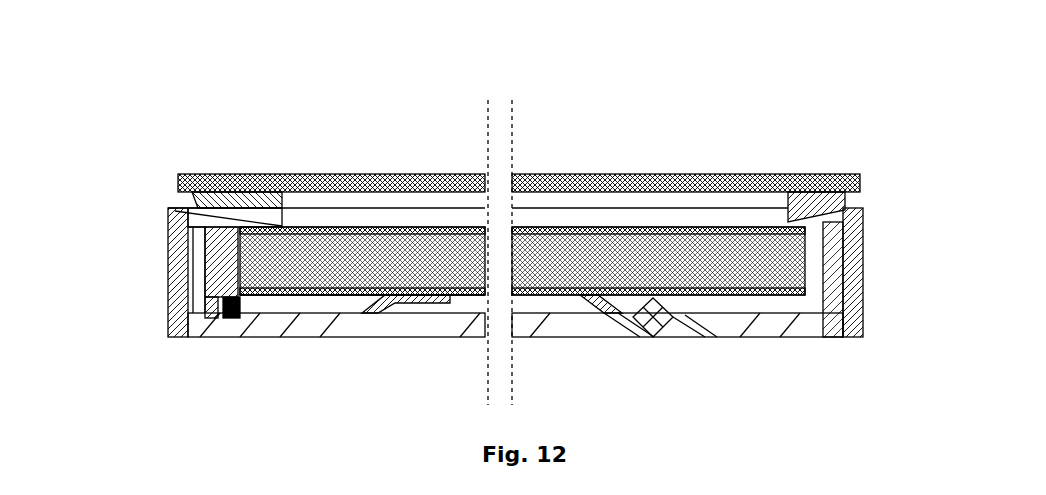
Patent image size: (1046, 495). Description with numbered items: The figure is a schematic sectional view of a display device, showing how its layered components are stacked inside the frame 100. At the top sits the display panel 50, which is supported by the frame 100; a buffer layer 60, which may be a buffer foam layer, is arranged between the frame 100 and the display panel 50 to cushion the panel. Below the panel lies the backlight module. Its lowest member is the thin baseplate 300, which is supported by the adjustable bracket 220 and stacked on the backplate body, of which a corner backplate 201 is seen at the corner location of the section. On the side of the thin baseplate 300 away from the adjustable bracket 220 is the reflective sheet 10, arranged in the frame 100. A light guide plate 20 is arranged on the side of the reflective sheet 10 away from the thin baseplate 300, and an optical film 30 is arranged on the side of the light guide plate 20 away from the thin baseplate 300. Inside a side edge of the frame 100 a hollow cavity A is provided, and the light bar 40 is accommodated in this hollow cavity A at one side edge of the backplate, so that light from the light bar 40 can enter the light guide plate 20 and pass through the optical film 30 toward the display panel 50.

The reflective sheet 10 is at (835, 285).
The light guide plate 20 is at (805, 249).
The optical film 30 is at (808, 200).
The light bar 40 is at (222, 310).
The display panel 50 is at (273, 180).
The buffer layer 60 is at (177, 174).
The frame 100 is at (180, 233).
The corner backplate 201 is at (200, 303).
The adjustable bracket 220 is at (270, 313).
The thin baseplate 300 is at (317, 292).
The hollow cavity A is at (230, 283).